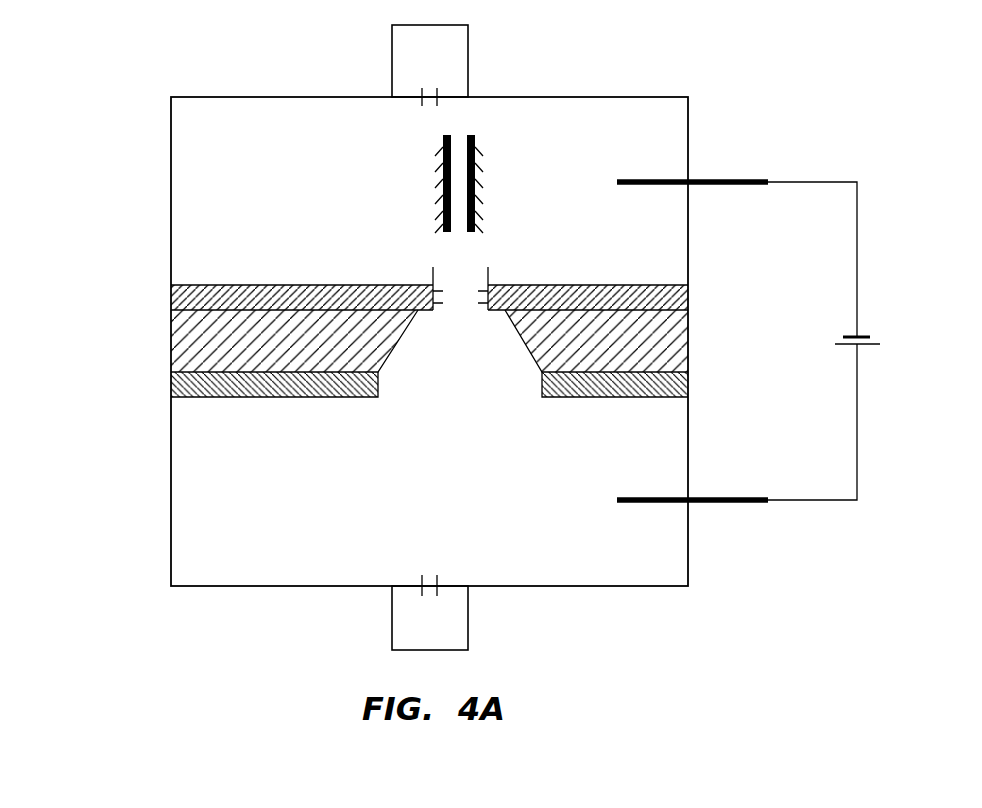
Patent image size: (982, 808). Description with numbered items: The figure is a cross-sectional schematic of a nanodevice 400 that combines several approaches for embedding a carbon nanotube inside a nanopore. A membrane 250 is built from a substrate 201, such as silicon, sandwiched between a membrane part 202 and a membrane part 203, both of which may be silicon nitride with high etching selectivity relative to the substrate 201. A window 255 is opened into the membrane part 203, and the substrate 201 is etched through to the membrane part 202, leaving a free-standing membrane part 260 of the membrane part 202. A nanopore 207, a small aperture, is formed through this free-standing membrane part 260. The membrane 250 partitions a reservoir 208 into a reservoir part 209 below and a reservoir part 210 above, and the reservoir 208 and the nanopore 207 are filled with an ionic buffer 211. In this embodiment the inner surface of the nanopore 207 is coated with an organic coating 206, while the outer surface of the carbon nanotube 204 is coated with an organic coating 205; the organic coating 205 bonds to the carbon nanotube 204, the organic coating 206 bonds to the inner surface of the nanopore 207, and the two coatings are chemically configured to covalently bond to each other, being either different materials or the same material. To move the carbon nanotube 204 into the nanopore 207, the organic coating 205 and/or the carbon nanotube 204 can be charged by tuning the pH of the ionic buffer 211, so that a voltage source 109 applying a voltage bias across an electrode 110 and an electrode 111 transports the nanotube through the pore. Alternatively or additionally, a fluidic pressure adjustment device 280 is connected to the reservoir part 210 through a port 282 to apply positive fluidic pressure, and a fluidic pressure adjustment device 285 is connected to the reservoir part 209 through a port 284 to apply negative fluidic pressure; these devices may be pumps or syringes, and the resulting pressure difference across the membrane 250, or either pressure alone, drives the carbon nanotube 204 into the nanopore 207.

The nanodevice 400 is at (148, 75).
The fluidic pressure adjustment device 280 is at (460, 47).
The port 282 is at (430, 91).
The port 284 is at (430, 589).
The fluidic pressure adjustment device 285 is at (458, 636).
The carbon nanotube 204 is at (443, 140).
The organic coating 205 is at (438, 175).
The organic coating 206 is at (436, 285).
The nanopore 207 is at (434, 268).
The membrane part 202 is at (171, 298).
The substrate 201 is at (172, 342).
The membrane part 203 is at (391, 384).
The membrane 250 is at (354, 341).
The free-standing membrane part 260 is at (414, 311).
The window 255 is at (545, 402).
The reservoir part 210 is at (157, 98).
The reservoir part 209 is at (156, 401).
The ionic buffer 211 is at (255, 555).
The reservoir 208 is at (695, 553).
The electrode 110 is at (736, 178).
The electrode 111 is at (731, 496).
The voltage source 109 is at (841, 348).